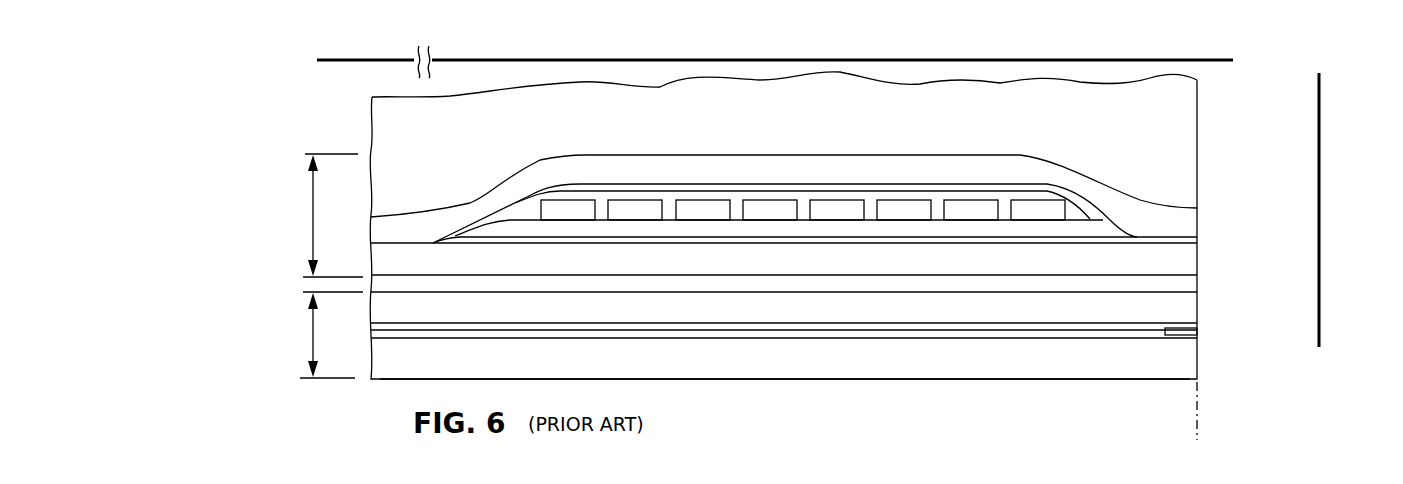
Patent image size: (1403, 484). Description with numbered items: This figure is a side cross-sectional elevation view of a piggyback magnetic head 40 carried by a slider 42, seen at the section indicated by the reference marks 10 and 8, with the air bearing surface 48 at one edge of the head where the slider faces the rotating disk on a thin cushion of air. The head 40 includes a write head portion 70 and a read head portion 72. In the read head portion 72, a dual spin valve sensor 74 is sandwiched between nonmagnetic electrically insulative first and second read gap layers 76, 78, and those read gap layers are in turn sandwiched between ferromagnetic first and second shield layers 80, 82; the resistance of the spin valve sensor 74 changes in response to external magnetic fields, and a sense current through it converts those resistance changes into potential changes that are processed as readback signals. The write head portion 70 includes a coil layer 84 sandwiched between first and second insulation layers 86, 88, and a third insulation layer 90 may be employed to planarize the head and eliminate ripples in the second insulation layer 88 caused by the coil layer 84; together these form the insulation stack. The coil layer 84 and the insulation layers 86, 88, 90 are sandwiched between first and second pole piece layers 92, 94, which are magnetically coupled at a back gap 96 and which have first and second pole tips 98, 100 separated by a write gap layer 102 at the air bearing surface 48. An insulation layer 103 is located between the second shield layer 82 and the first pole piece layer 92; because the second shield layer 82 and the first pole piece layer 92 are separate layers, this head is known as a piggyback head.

The section line 8- 8 is at (1334, 80).
The section line 10- 10 is at (324, 50).
The magnetic head 40 is at (343, 103).
The slider 42 is at (1182, 107).
The air bearing surface 48 is at (1197, 433).
The write head portion 70 is at (313, 220).
The read head portion 72 is at (310, 338).
The spin valve sensor 74 is at (1197, 332).
The first read gap layer 76 is at (852, 338).
The second read gap layer 78 is at (818, 323).
The first shield layer 80 is at (958, 362).
The second shield layer 82 is at (1065, 310).
The coil layer 84 is at (835, 203).
The first insulation layer 86 is at (740, 228).
The second insulation layer 88 is at (1083, 210).
The third insulation layer 90 is at (610, 185).
The first pole piece layer 92 is at (1113, 265).
The second pole piece layer 94 is at (975, 167).
The back gap 96 is at (413, 243).
The first pole tip 98 is at (1197, 263).
The second pole tip 100 is at (1190, 218).
The write gap layer 102 is at (1197, 239).
The insulation layer 103 is at (1020, 285).